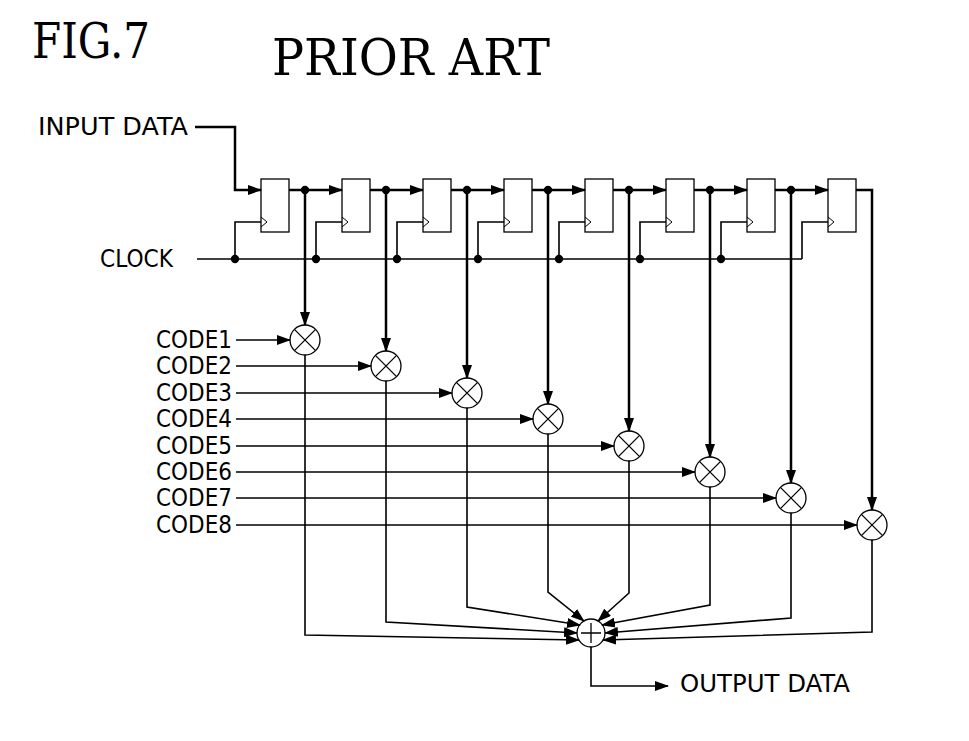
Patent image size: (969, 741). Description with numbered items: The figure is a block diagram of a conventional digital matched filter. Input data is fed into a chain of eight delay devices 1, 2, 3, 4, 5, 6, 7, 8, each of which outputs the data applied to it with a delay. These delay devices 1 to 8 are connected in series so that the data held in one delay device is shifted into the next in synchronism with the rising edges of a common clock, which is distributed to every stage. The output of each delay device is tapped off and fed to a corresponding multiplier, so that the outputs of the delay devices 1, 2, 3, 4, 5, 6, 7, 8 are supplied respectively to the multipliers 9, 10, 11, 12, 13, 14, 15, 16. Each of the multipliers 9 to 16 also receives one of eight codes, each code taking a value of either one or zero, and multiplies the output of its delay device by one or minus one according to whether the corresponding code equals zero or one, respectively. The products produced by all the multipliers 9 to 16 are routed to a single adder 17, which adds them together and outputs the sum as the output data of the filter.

The delay device 1 is at (278, 179).
The delay device 2 is at (359, 179).
The delay device 3 is at (440, 179).
The delay device 4 is at (521, 179).
The delay device 5 is at (602, 179).
The delay device 6 is at (683, 179).
The delay device 7 is at (764, 179).
The delay device 8 is at (845, 179).
The multiplier 9 is at (316, 329).
The multiplier 10 is at (397, 355).
The multiplier 11 is at (478, 382).
The multiplier 12 is at (559, 408).
The multiplier 13 is at (640, 435).
The multiplier 14 is at (721, 461).
The multiplier 15 is at (802, 487).
The multiplier 16 is at (883, 514).
The adder 17 is at (594, 619).